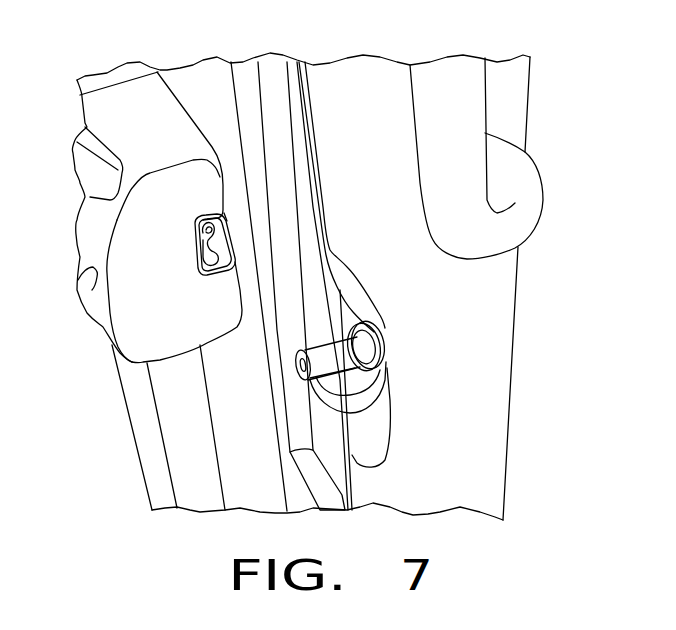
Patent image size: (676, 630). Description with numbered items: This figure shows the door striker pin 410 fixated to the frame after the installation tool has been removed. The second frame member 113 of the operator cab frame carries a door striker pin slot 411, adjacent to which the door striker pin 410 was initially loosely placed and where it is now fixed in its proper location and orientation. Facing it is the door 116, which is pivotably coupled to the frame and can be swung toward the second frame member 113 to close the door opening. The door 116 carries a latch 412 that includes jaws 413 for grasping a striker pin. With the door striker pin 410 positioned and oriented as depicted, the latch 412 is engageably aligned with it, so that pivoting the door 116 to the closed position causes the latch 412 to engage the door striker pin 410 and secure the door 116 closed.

The door 116 is at (192, 80).
The second frame member 113 is at (470, 402).
The door striker pin 410 is at (342, 371).
The door striker pin slot 411 is at (380, 326).
The latch 412 is at (236, 232).
The jaws 413 is at (204, 250).